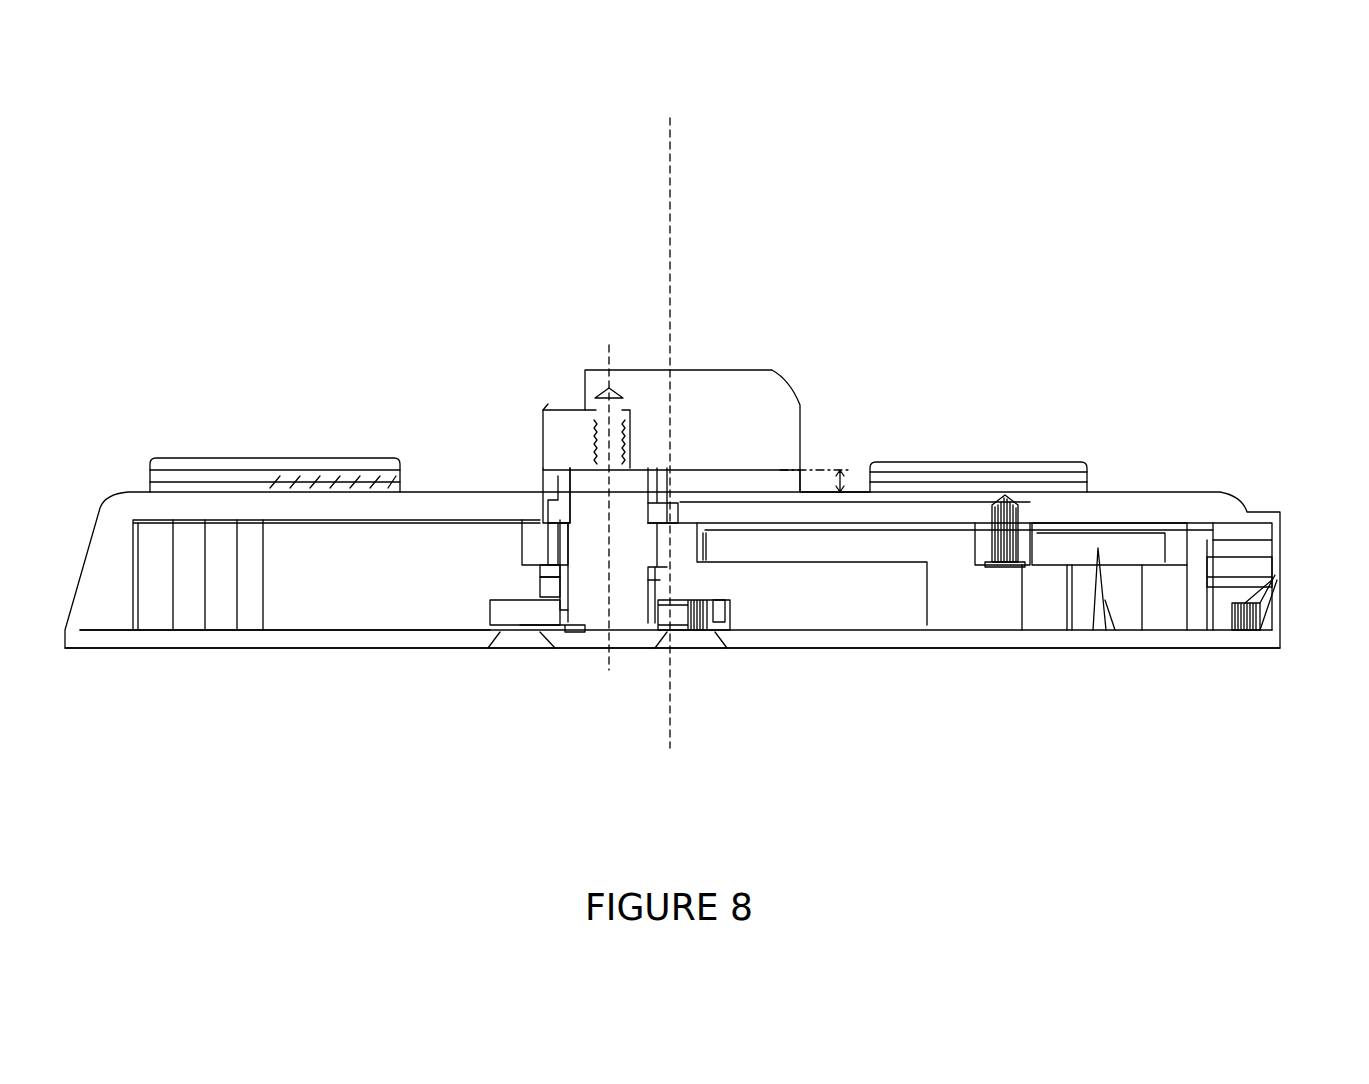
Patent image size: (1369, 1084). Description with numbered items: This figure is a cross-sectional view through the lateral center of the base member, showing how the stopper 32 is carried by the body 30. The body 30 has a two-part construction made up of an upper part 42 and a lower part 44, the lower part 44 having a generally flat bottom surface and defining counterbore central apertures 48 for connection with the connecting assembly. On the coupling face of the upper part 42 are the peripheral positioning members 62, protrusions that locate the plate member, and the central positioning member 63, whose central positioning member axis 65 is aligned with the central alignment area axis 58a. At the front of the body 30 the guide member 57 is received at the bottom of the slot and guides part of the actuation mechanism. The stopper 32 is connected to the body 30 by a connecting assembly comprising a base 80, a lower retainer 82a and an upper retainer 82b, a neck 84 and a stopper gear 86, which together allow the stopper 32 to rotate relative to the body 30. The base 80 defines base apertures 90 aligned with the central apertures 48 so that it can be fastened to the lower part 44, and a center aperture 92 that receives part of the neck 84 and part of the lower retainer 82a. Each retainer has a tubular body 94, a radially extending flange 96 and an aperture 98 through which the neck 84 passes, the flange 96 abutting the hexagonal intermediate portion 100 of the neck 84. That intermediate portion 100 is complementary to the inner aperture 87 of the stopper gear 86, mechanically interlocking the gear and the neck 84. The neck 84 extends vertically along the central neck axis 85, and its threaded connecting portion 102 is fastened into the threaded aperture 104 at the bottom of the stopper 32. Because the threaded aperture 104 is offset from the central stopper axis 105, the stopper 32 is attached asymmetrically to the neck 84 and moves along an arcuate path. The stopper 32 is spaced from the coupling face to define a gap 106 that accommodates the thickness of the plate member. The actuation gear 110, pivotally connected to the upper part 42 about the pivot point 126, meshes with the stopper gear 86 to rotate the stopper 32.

The body 30 is at (92, 456).
The stopper 32 is at (755, 380).
The upper part 42 is at (278, 515).
The lower part 44 is at (143, 640).
The central apertures 48 is at (513, 650).
The guide member 57 is at (1262, 567).
The central alignment area axis 58a is at (670, 205).
The peripheral positioning members 62 is at (196, 472).
The central positioning member 63 is at (795, 478).
The central positioning member axis 65 is at (668, 150).
The base 80 is at (490, 615).
The lower retainer 82a is at (566, 632).
The upper retainer 82b is at (545, 468).
The neck 84 is at (596, 559).
The central neck axis 85 is at (605, 360).
The stopper gear 86 is at (522, 543).
The inner aperture 87 is at (660, 578).
The base apertures 90 is at (697, 592).
The center aperture 92 is at (575, 632).
The tubular body 94 is at (651, 380).
The flange 96 is at (553, 513).
The aperture 98 is at (573, 468).
The intermediate portion 100 is at (652, 532).
The connecting portion 102 is at (543, 410).
The threaded aperture 104 is at (640, 380).
The central stopper axis 105 is at (672, 240).
The gap 106 is at (840, 480).
The actuation gear 110 is at (1130, 552).
The pivot point 126 is at (1017, 523).